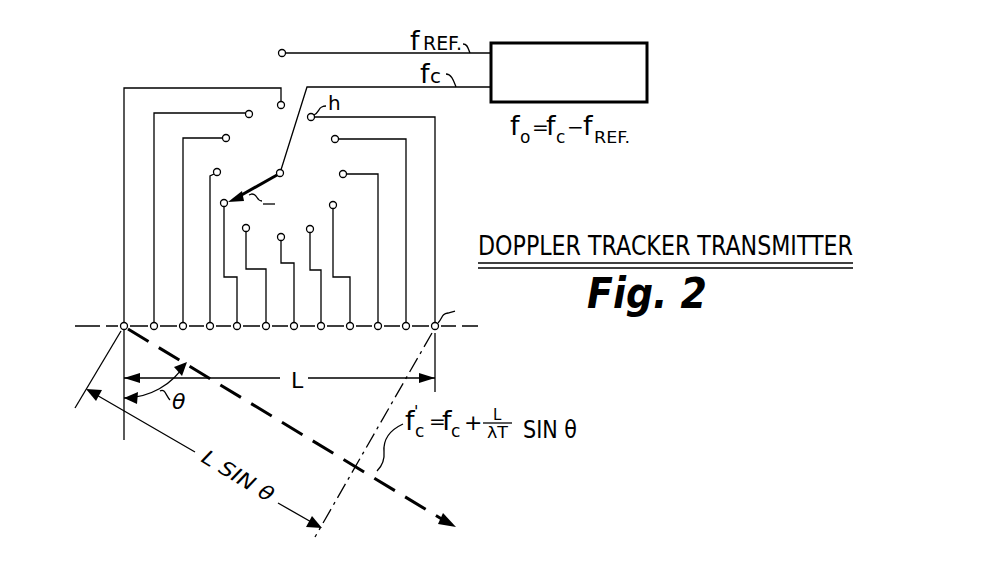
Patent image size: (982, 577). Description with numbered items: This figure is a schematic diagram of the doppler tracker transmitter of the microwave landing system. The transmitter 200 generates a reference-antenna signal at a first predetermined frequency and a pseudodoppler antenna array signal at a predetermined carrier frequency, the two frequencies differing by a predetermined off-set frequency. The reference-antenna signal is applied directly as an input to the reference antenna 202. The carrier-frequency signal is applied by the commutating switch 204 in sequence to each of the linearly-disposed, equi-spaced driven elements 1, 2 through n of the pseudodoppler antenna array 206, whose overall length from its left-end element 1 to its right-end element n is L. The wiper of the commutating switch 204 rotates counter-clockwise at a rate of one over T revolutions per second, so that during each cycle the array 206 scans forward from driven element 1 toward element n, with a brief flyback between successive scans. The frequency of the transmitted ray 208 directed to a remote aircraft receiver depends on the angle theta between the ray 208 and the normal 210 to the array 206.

The transmitter 200 is at (647, 72).
The reference antenna 202 is at (284, 50).
The commutating switch 204 is at (330, 165).
The pseudodoppler antenna array 206 is at (419, 331).
The transmitted ray 208 is at (290, 425).
The normal 210 is at (123, 428).
The driven element 1 is at (284, 103).
The driven element 2 is at (252, 111).